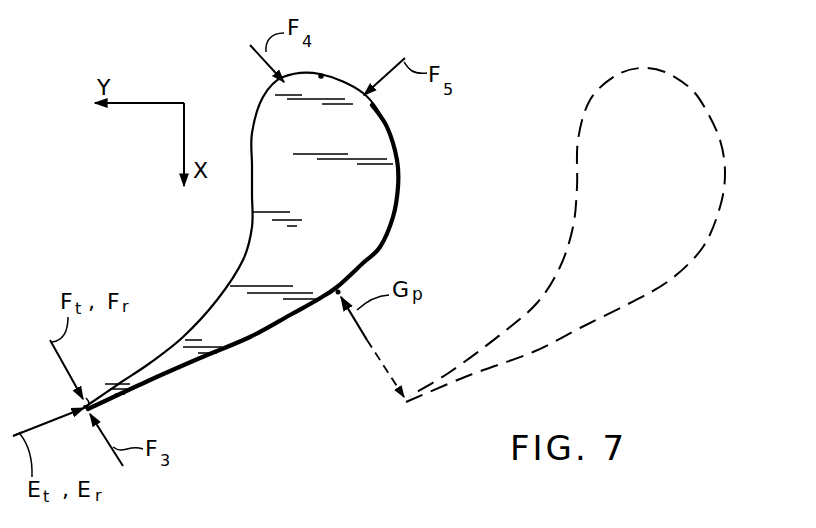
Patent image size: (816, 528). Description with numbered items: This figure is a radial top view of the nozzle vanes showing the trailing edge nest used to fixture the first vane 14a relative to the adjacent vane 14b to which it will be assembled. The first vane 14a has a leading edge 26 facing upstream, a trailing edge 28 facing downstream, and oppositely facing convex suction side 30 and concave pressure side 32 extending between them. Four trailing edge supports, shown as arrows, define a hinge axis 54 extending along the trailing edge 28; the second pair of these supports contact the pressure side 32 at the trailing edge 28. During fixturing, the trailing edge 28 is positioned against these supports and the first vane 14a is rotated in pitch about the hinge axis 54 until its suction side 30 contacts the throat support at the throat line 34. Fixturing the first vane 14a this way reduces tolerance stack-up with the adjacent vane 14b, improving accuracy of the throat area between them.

The first vane 14a is at (278, 241).
The adjacent vane 14b is at (682, 85).
The leading edge 26 is at (321, 74).
The trailing edge 28 is at (84, 412).
The suction side 30 is at (395, 222).
The pressure side 32 is at (250, 172).
The throat line 34 is at (338, 290).
The hinge axis 54 is at (87, 396).